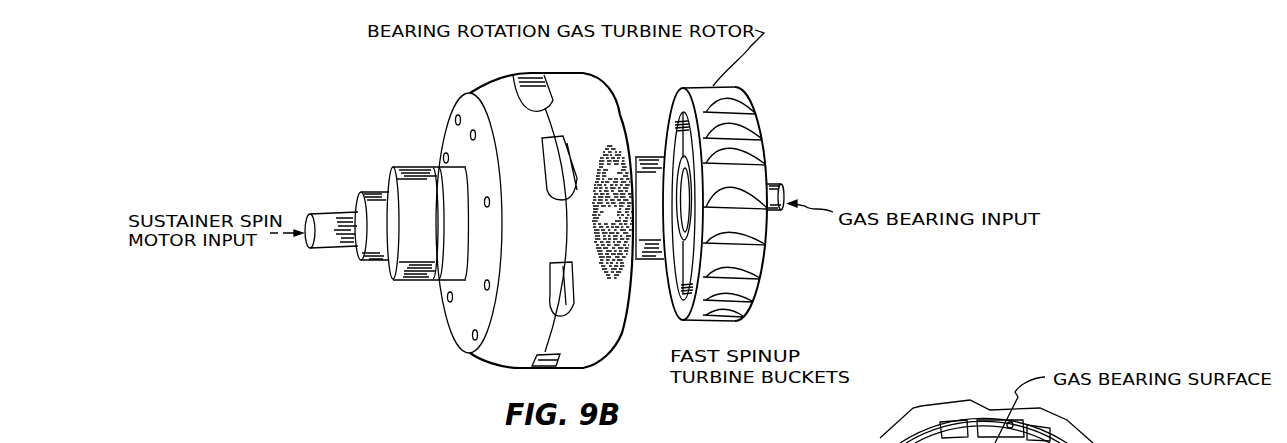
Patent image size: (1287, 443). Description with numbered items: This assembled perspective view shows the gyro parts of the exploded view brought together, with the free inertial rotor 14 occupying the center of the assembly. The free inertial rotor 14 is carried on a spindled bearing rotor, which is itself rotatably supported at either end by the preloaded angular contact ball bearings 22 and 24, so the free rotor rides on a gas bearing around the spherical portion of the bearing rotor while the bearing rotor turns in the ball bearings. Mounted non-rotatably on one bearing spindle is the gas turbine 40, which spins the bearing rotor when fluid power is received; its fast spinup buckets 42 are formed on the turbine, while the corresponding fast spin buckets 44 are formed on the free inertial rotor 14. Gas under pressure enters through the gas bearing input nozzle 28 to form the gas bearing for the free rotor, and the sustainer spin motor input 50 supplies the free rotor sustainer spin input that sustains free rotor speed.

The free inertial rotor 14 is at (435, 227).
The preloaded angular contact ball bearing 22 is at (420, 169).
The preloaded angular contact ball bearing 24 is at (648, 156).
The gas bearing input nozzle 28 is at (786, 191).
The gas turbine 40 is at (723, 188).
The fast spinup buckets 42 is at (747, 165).
The fast spin buckets 44 is at (573, 313).
The sustainer spin motor input 50 is at (325, 213).